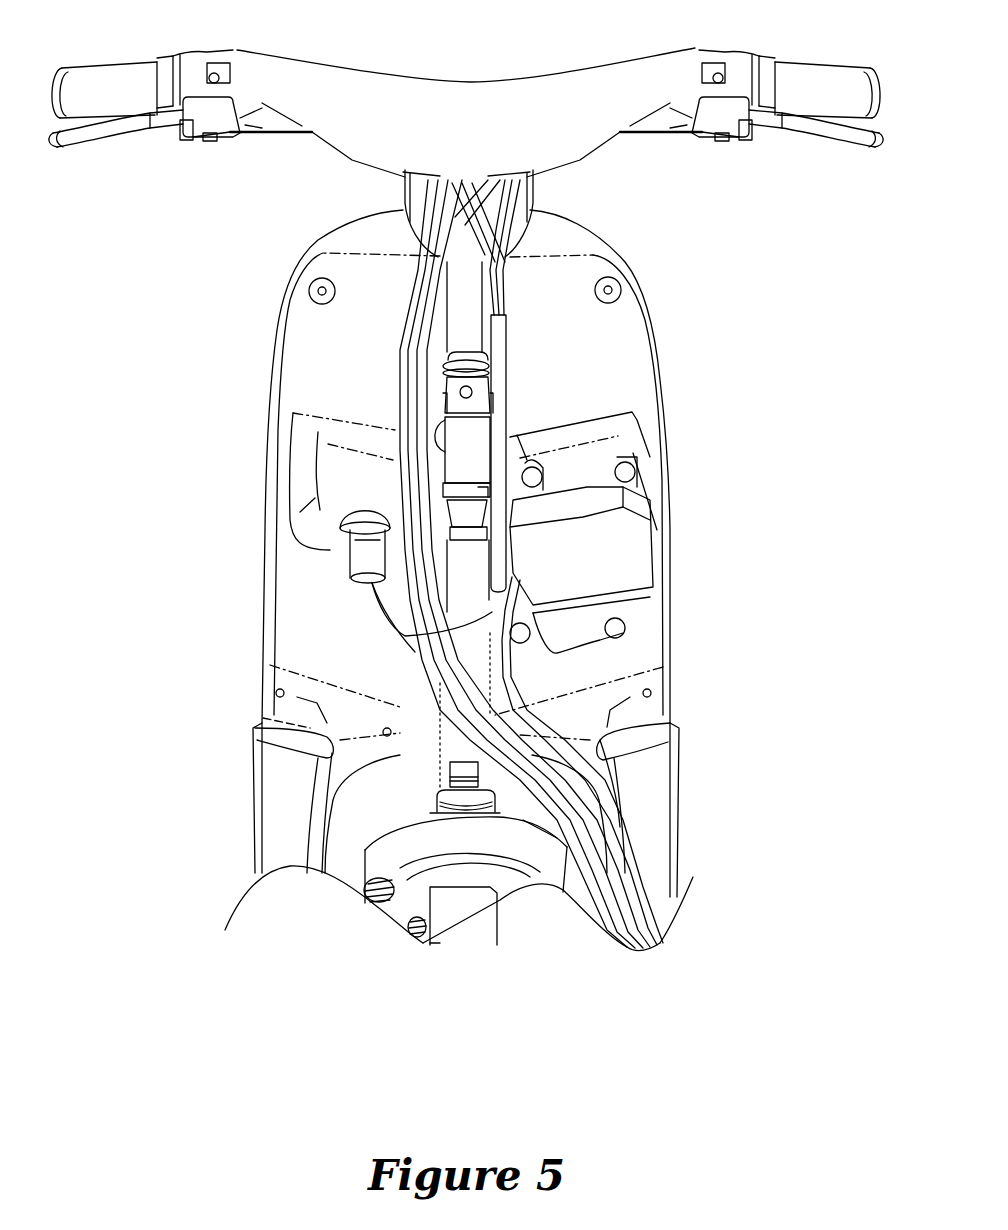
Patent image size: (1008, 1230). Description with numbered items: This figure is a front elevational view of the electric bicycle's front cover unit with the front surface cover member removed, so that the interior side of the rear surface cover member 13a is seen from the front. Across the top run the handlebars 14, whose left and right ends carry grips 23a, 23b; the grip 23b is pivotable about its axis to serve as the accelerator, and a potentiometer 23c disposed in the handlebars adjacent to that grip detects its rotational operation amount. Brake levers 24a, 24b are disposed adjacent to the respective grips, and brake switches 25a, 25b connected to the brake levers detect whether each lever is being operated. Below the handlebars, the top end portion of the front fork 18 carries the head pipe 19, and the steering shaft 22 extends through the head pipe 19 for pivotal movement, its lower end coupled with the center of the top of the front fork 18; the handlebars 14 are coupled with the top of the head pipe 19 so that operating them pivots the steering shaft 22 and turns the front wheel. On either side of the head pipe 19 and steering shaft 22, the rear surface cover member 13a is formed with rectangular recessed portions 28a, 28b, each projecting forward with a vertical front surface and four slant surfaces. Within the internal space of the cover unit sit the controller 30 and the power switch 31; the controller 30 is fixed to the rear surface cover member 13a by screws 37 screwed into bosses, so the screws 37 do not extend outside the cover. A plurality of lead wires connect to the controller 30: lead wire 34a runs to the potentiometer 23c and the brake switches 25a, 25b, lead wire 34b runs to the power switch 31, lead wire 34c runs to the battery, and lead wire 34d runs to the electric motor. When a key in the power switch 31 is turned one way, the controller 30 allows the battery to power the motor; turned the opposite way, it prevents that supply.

The rear surface cover member 13a is at (636, 355).
The handlebars 14 is at (399, 95).
The front fork 18 is at (357, 893).
The head pipe 19 is at (460, 612).
The steering shaft 22 is at (465, 333).
The grip 23a is at (853, 90).
The grip 23b is at (112, 82).
The potentiometer 23c is at (220, 60).
The brake lever 24a is at (830, 133).
The brake lever 24b is at (97, 133).
The brake switch 25a is at (725, 143).
The brake switch 25b is at (205, 143).
The recessed portion 28a is at (640, 440).
The recessed portion 28b is at (326, 462).
The controller 30 is at (655, 530).
The power switch 31 is at (345, 558).
The lead wire 34a is at (505, 306).
The lead wire 34b is at (406, 630).
The lead wire 34c is at (632, 885).
The lead wire 34d is at (633, 950).
The screws 37 is at (623, 463).